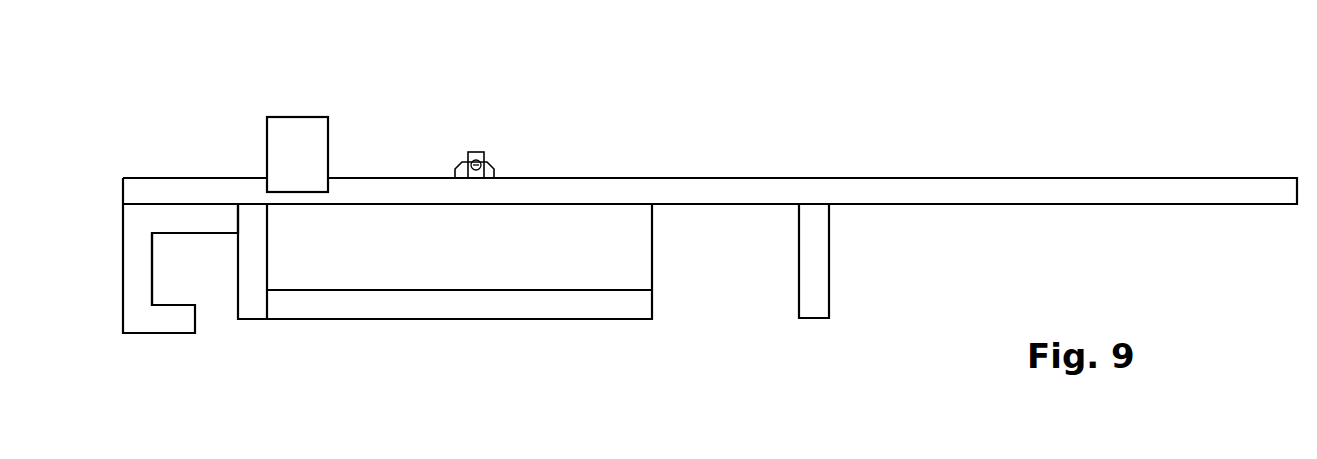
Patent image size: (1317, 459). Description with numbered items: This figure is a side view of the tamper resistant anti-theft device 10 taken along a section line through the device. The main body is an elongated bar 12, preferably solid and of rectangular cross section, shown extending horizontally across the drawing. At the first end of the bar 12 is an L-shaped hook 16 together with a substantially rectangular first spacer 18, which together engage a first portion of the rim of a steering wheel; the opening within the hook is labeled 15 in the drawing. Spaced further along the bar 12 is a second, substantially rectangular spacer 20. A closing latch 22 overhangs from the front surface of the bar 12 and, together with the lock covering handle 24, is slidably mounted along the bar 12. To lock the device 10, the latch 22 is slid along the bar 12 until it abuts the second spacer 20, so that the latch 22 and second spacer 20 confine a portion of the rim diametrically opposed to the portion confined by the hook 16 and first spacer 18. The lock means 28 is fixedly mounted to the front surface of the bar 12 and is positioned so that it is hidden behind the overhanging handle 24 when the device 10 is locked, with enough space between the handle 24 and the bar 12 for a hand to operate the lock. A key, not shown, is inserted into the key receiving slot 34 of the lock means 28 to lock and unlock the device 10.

The device 10 is at (787, 154).
The elongated bar 12 is at (988, 178).
The slot 15 is at (153, 270).
The L-shaped hook 16 is at (150, 334).
The first spacer 18 is at (243, 320).
The second spacer 20 is at (830, 308).
The closing latch 22 is at (532, 313).
The lock covering handle 24 is at (312, 117).
The lock means 28 is at (485, 150).
The key receiving slot 34 is at (488, 165).